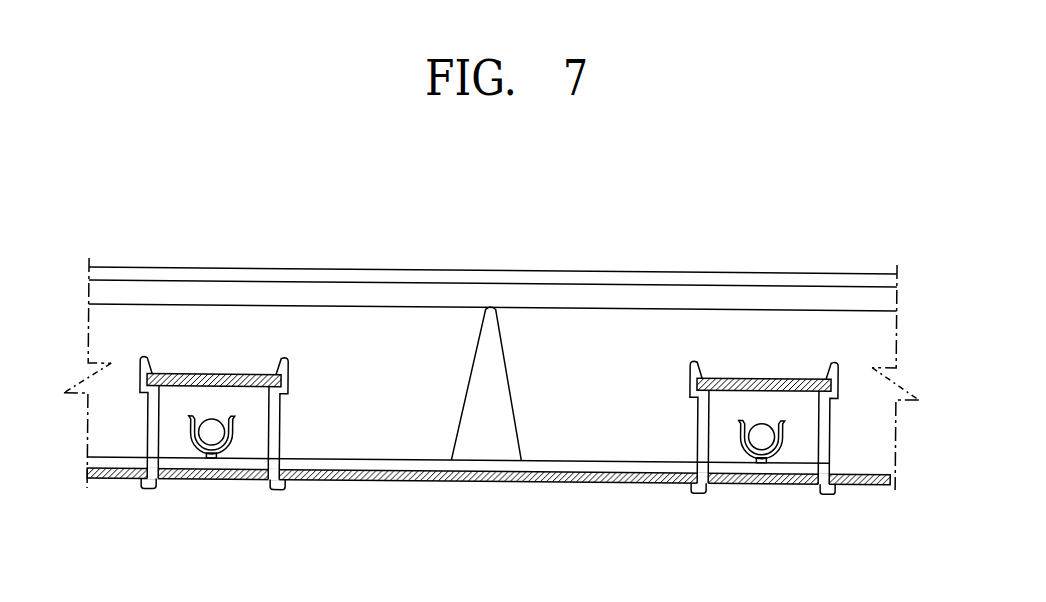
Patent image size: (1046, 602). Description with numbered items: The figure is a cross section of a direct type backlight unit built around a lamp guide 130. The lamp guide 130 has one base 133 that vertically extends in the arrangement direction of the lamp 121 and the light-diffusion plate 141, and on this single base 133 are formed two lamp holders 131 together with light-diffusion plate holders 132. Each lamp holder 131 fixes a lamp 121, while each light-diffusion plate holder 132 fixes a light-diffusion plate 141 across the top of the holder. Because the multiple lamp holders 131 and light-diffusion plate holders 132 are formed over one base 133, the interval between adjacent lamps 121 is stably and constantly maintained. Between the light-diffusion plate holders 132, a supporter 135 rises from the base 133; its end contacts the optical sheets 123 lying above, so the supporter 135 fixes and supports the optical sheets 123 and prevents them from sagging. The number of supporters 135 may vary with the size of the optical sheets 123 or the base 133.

The optical sheets 123 is at (663, 292).
The base 133 is at (390, 482).
The supporter 135 is at (478, 385).
The lamp guide 130 is at (297, 407).
The light-diffusion plate holder 132 is at (278, 432).
The light-diffusion plate 141 is at (212, 373).
The lamp holder 131 is at (193, 432).
The lamp 121 is at (213, 438).